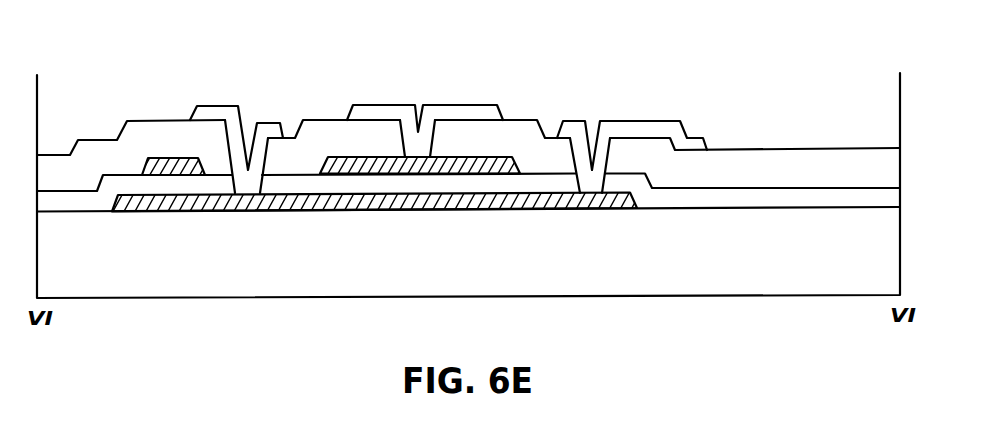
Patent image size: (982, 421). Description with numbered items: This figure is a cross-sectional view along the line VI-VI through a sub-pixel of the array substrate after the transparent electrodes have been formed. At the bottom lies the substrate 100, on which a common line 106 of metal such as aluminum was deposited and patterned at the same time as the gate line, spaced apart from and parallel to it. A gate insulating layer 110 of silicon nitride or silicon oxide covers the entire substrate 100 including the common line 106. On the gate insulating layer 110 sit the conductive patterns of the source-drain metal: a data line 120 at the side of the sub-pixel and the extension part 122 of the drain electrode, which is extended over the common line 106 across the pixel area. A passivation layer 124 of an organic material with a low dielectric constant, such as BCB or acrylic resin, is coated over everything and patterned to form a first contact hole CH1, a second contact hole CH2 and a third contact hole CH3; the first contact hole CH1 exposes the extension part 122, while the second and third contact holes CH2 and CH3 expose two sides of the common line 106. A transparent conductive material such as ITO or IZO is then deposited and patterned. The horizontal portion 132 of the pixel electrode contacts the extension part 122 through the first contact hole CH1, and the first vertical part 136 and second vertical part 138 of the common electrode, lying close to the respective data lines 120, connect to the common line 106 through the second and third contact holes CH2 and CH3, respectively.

The substrate 100 is at (874, 278).
The common line 106 is at (370, 210).
The gate insulating layer 110 is at (62, 186).
The data line 120 is at (170, 158).
The extension part 122 is at (515, 155).
The passivation layer 124 is at (97, 140).
The horizontal portion 132 is at (467, 104).
The first vertical part 136 is at (268, 121).
The second vertical part 138 is at (632, 121).
The first contact hole CH1 is at (420, 97).
The second contact hole CH2 is at (251, 103).
The third contact hole CH3 is at (595, 112).